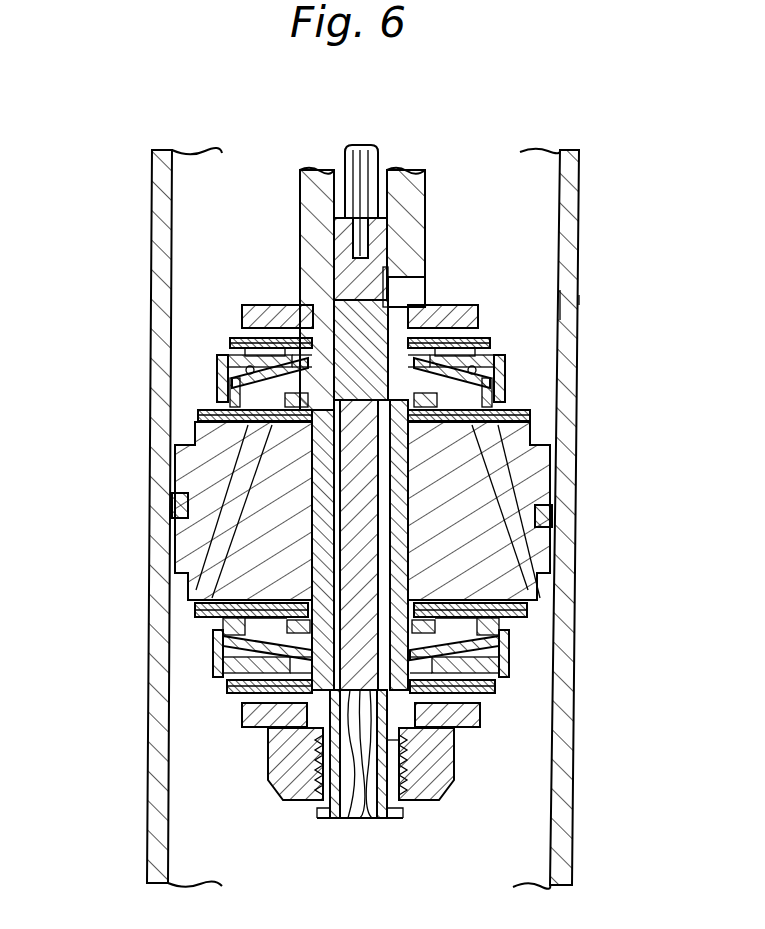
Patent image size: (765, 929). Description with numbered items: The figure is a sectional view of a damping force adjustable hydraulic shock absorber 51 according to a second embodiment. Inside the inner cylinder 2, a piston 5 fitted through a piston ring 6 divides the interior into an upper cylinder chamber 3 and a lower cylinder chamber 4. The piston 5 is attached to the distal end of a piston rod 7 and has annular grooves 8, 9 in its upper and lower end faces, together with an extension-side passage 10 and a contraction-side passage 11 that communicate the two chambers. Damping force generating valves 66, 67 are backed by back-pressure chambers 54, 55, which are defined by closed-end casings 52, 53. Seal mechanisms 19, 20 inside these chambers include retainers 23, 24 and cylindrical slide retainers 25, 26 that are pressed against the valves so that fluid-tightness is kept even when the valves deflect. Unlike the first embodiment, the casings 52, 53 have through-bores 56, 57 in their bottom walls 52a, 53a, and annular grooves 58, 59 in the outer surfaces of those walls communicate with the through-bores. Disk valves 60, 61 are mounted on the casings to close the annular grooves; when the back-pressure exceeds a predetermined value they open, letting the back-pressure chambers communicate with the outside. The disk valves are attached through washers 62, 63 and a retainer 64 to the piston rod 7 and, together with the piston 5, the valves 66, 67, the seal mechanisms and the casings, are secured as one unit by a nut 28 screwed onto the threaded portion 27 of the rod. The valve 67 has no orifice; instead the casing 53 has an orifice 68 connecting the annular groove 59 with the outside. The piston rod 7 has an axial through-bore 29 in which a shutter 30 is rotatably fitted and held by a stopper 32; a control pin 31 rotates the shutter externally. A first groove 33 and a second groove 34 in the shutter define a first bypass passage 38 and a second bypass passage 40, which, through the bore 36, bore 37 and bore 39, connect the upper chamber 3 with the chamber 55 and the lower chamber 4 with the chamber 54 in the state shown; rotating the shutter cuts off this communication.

The inner cylinder 2 is at (577, 215).
The upper cylinder chamber 3 is at (566, 178).
The lower cylinder chamber 4 is at (540, 819).
The piston 5 is at (552, 515).
The piston ring 6 is at (500, 545).
The piston rod 7 is at (412, 185).
The upper annular groove 8 is at (548, 432).
The lower annular groove 9 is at (530, 615).
The extension-side passage 10 is at (546, 588).
The contraction-side passage 11 is at (195, 545).
The seal mechanism 19 is at (250, 388).
The seal mechanism 20 is at (236, 670).
The retainer 23 is at (440, 300).
The retainer 24 is at (445, 760).
The slide retainer 25 is at (335, 472).
The slide retainer 26 is at (210, 610).
The threaded portion 27 is at (395, 800).
The nut 28 is at (450, 790).
The through-bore 29 is at (303, 240).
The shutter 30 is at (336, 830).
The control pin 31 is at (372, 165).
The stopper 32 is at (380, 830).
The first groove 33 is at (360, 815).
The second groove 34 is at (300, 800).
The bore 36 is at (405, 262).
The bore 37 is at (445, 815).
The first bypass passage 38 is at (400, 492).
The bore 39 is at (322, 320).
The second bypass passage 40 is at (172, 505).
The hydraulic shock absorber 51 is at (600, 300).
The casing 52 is at (232, 372).
The bottom wall 52a is at (508, 378).
The casing 53 is at (225, 686).
The bottom wall 53a is at (500, 690).
The back-pressure chamber 54 is at (215, 416).
The back-pressure chamber 55 is at (240, 650).
The through-bore 56 is at (240, 345).
The through-bore 57 is at (245, 690).
The annular groove 58 is at (495, 345).
The annular groove 59 is at (520, 724).
The disk valve 60 is at (250, 318).
The disk valve 61 is at (270, 718).
The washer 62 is at (470, 310).
The washer 63 is at (250, 732).
The retainer 64 is at (512, 320).
The damping force generating valve 66 is at (530, 415).
The damping force generating valve 67 is at (512, 655).
The orifice 68 is at (480, 715).